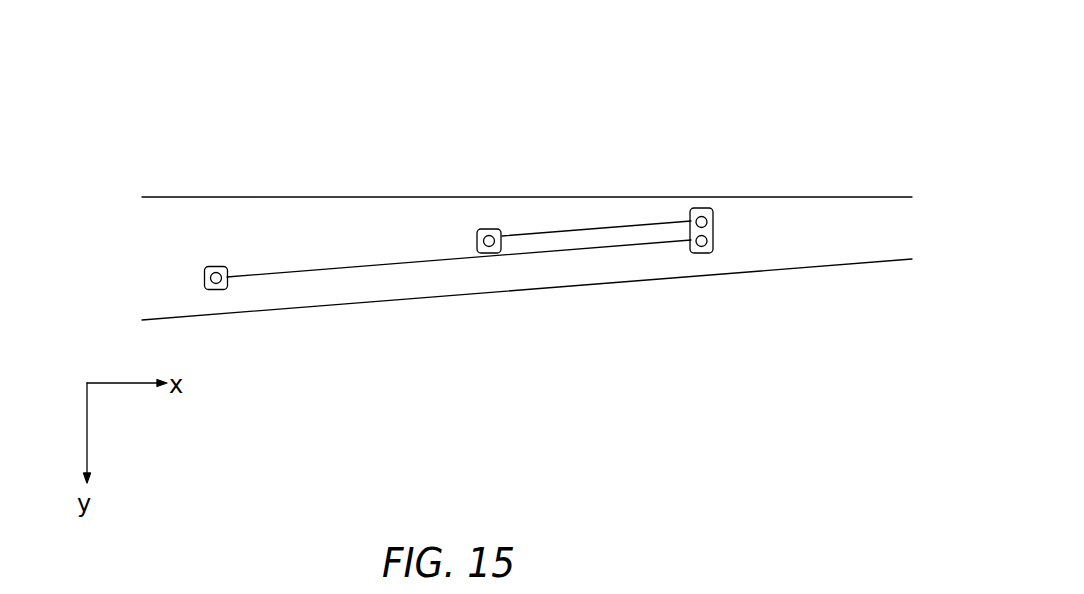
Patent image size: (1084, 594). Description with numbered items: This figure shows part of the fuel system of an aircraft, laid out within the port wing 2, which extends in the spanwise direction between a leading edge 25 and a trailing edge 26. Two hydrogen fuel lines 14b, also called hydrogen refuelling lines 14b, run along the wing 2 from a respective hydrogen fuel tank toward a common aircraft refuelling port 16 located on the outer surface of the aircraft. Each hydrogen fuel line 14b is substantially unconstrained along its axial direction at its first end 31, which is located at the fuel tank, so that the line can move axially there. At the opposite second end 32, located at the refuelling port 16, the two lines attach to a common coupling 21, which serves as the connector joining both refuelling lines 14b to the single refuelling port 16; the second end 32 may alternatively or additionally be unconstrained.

The wing 2 is at (290, 112).
The trailing edge 26 is at (417, 197).
The leading edge 25 is at (462, 294).
The hydrogen refuelling line 14b is at (563, 237).
The first end 31 is at (204, 277).
The coupling 21 is at (698, 208).
The second end 32 is at (709, 208).
The refuelling port 16 is at (733, 238).